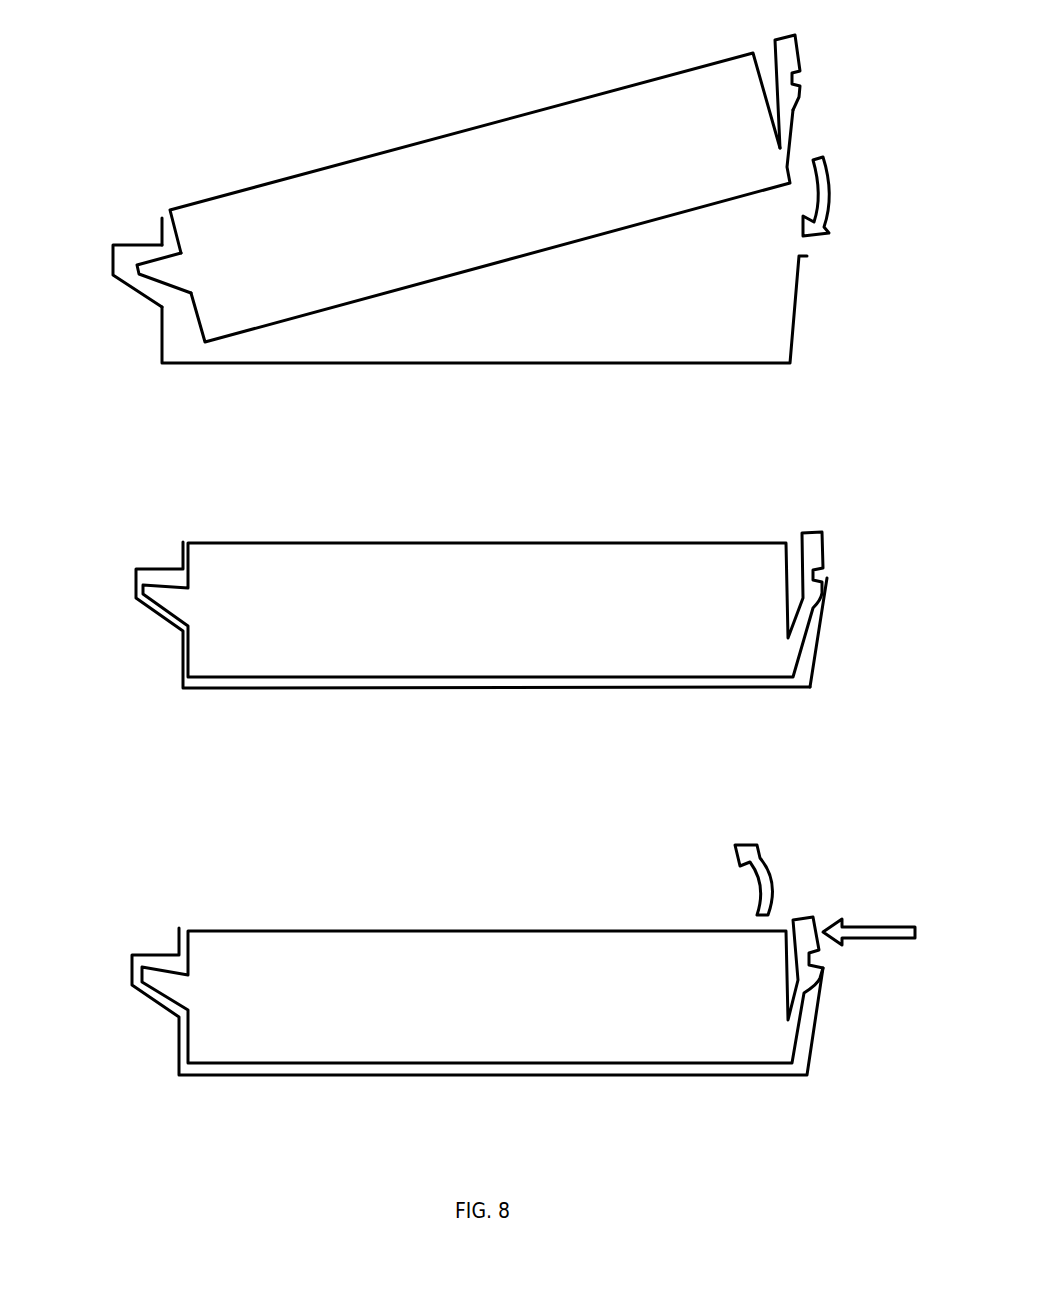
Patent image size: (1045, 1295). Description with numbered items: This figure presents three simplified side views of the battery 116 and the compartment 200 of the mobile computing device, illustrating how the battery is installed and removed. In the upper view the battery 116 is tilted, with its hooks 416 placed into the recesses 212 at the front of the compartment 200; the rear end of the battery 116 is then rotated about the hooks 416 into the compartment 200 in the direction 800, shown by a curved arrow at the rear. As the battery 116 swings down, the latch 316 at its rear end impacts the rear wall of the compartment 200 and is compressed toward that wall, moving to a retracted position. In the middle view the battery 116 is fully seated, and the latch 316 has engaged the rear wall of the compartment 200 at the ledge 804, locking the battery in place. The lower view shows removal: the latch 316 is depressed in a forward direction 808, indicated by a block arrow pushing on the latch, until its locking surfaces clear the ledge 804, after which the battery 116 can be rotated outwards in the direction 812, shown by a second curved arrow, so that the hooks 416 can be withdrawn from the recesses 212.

The battery 116 is at (454, 206).
The compartment 200 is at (609, 317).
The latch 316 is at (803, 79).
The hooks 416 is at (137, 265).
The recesses 212 is at (145, 286).
The direction 800 is at (829, 192).
The ledge 804 is at (825, 579).
The forward direction 808 is at (912, 922).
The direction 812 is at (727, 868).